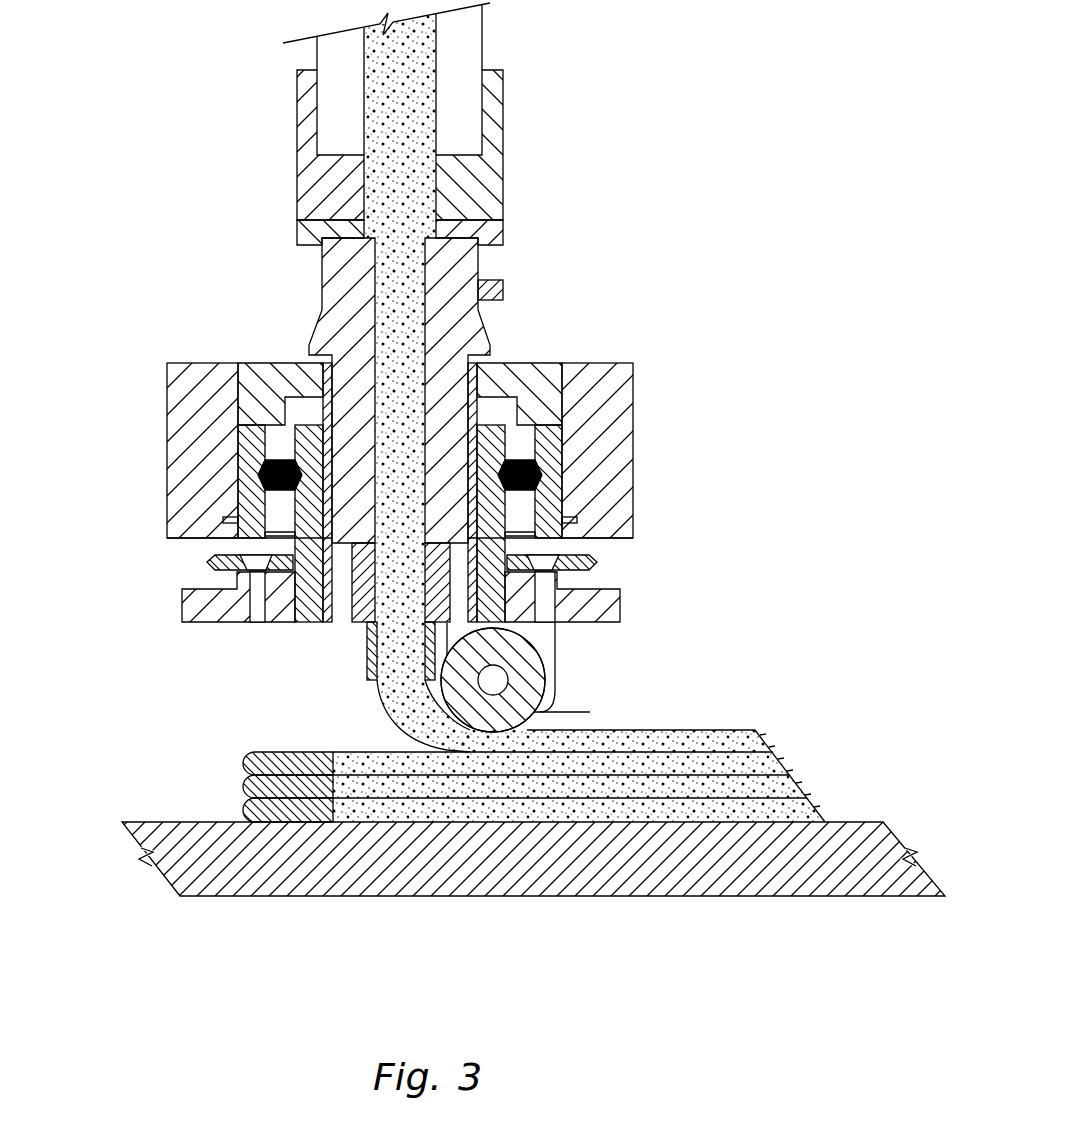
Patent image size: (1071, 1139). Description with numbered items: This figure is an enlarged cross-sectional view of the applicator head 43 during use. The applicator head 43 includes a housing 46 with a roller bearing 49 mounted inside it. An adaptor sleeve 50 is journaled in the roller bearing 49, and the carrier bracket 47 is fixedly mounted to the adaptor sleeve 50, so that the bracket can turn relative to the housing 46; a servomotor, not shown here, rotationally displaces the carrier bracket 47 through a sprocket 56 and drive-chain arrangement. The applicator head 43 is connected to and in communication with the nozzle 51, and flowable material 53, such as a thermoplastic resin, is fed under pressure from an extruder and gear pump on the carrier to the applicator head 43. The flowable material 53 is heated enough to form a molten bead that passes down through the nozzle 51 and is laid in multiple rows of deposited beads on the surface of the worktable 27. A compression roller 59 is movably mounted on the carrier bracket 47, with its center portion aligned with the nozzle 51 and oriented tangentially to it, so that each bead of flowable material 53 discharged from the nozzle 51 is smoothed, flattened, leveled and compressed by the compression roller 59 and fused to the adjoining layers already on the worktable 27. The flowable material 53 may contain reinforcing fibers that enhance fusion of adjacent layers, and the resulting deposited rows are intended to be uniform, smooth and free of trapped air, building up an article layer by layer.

The worktable 27 is at (173, 822).
The applicator head 43 is at (634, 492).
The housing 46 is at (167, 440).
The carrier bracket 47 is at (167, 607).
The roller bearing 49 is at (555, 445).
The adaptor sleeve 50 is at (340, 592).
The nozzle 51 is at (367, 668).
The flowable material 53 is at (388, 716).
The sprocket 56 is at (598, 560).
The compression roller 59 is at (588, 712).